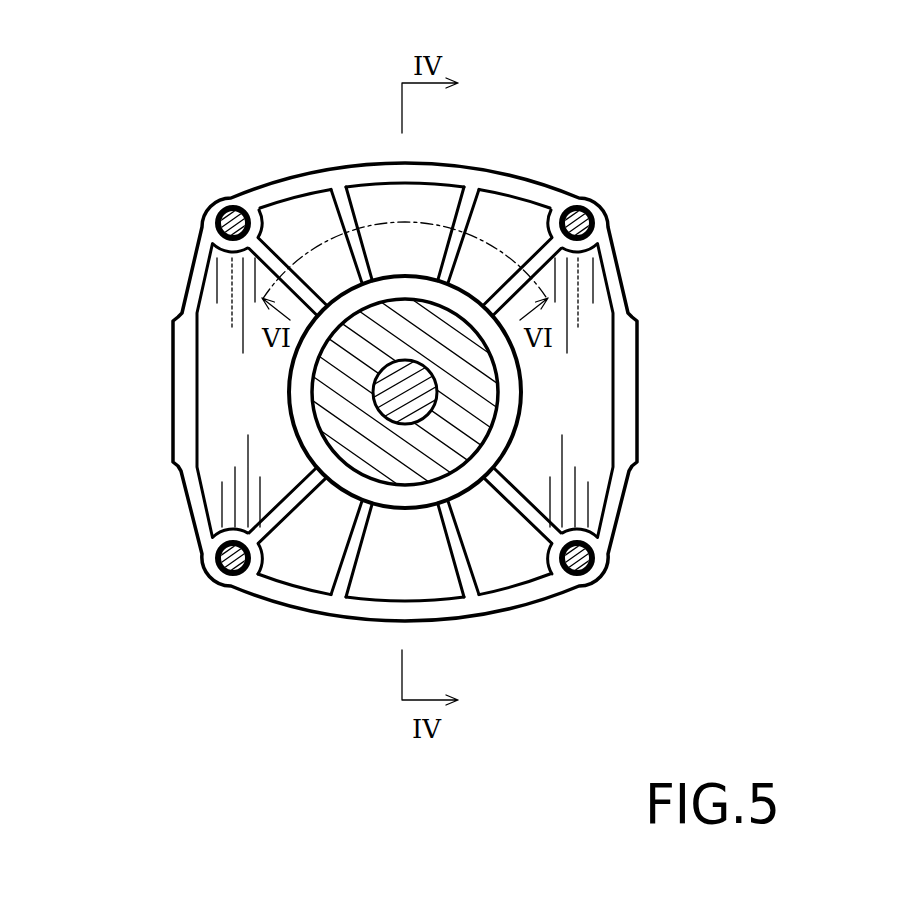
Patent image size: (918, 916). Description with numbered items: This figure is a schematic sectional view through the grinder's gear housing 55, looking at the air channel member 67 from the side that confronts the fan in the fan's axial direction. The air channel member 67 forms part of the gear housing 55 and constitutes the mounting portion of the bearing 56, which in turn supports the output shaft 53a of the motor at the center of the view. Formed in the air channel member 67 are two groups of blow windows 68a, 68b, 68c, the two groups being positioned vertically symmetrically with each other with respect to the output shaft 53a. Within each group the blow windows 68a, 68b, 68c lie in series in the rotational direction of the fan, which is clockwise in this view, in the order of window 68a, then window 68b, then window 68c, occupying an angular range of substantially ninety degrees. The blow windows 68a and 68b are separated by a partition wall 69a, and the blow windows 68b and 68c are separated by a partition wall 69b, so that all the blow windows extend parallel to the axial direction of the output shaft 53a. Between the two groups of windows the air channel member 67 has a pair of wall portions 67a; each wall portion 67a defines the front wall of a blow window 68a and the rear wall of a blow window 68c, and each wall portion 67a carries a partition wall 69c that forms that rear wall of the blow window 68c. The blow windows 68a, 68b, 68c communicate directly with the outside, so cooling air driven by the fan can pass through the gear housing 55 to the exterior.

The output shaft 53a is at (445, 415).
The gear housing 55 is at (553, 188).
The bearing 56 is at (413, 402).
The air channel member 67 is at (240, 467).
The wall portion 67a is at (225, 392).
The blow window 68a is at (300, 222).
The blow window 68b is at (400, 185).
The blow window 68c is at (512, 205).
The partition wall 69a is at (352, 195).
The partition wall 69b is at (470, 190).
The partition wall 69c is at (548, 261).